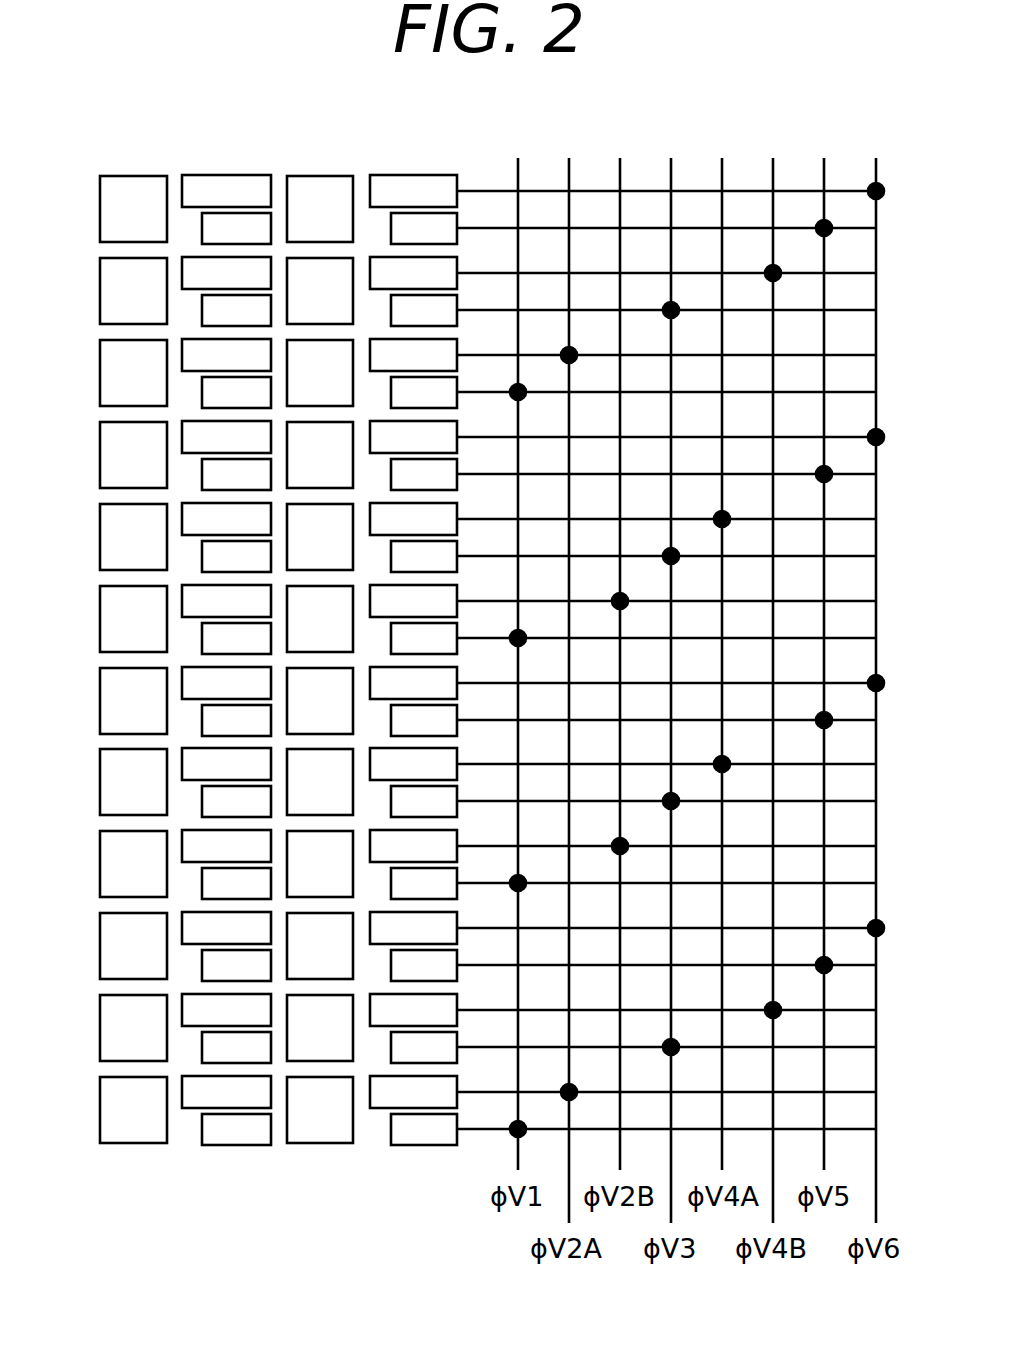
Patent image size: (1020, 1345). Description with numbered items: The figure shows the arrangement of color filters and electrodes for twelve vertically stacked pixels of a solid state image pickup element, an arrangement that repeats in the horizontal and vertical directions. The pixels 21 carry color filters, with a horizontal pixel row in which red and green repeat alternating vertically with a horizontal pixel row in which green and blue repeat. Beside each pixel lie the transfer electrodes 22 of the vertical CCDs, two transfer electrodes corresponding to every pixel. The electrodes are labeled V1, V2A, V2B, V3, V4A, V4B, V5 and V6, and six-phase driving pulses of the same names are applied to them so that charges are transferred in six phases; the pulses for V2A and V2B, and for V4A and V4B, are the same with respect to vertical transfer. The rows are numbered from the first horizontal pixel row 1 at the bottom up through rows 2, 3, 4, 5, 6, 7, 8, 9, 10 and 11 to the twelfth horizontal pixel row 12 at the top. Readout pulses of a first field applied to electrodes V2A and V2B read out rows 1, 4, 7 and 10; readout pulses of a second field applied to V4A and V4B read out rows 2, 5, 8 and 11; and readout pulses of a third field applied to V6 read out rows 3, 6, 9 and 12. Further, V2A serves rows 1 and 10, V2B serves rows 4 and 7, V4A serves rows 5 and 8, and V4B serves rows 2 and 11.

The pixels 21 is at (125, 176).
The transfer electrodes 22 is at (203, 176).
The pixel row 1 is at (259, 1110).
The pixel row 2 is at (259, 1028).
The pixel row 3 is at (259, 946).
The pixel row 4 is at (259, 864).
The pixel row 5 is at (259, 782).
The pixel row 6 is at (259, 701).
The pixel row 7 is at (259, 619).
The pixel row 8 is at (259, 537).
The pixel row 9 is at (259, 455).
The pixel row 10 is at (254, 373).
The pixel row 11 is at (254, 291).
The pixel row 12 is at (254, 209).